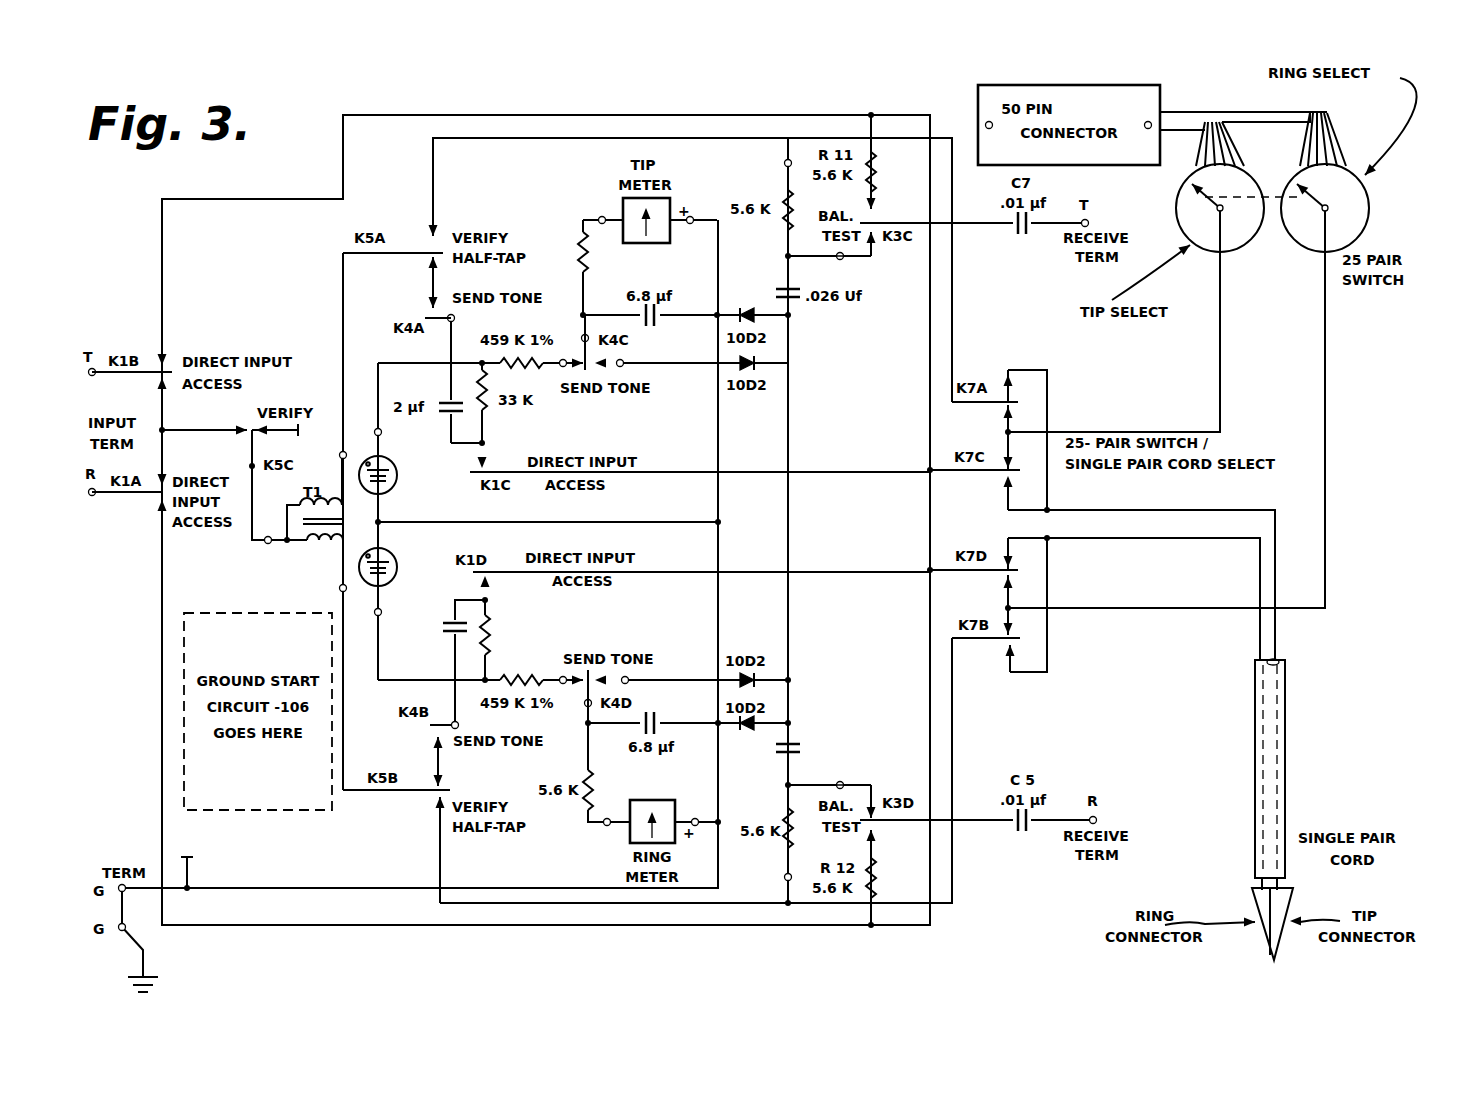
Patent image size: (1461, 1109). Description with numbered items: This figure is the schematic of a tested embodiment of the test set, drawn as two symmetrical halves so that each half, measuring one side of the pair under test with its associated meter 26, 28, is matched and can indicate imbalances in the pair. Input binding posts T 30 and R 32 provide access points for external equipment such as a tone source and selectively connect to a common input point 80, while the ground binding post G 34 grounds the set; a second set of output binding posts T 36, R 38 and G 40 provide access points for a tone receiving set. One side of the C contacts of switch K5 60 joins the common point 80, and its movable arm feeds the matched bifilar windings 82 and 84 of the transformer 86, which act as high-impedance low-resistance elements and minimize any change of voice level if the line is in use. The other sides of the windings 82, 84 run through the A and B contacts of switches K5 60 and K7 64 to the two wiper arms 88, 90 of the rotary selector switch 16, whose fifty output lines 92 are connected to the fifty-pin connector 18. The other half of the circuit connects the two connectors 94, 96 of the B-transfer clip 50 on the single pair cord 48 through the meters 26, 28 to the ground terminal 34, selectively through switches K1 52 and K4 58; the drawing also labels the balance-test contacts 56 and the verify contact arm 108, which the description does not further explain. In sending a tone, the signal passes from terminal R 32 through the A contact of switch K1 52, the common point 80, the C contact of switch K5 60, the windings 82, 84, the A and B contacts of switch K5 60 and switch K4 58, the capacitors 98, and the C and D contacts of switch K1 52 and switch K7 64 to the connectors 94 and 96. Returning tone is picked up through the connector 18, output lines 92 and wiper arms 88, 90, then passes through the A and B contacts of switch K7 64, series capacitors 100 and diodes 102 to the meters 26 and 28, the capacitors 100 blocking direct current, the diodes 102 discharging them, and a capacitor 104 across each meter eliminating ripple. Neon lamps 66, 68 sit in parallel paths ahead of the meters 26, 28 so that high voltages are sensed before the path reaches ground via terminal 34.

The selector switch 16 is at (1313, 250).
The 50-pin connector 18 is at (1168, 93).
The meter 26 is at (655, 228).
The meter 28 is at (630, 835).
The input binding post T 30 is at (100, 366).
The input binding post R 32 is at (94, 500).
The ground binding post G 34 is at (127, 895).
The output binding post T 36 is at (1093, 220).
The output binding post R 38 is at (1097, 818).
The output binding post G 40 is at (118, 935).
The single pair cord 48 is at (1287, 735).
The clip 50 is at (1300, 898).
The switch K1 52 is at (146, 345).
The balance test relay contacts 56 is at (875, 215).
The switch K4 58 is at (412, 300).
The switch K5 60 is at (445, 222).
The switch K7 64 is at (1058, 398).
The neon lamp 66 is at (398, 478).
The neon lamp 68 is at (394, 562).
The common input point 80 is at (165, 428).
The bifilar winding 82 is at (295, 506).
The bifilar winding 84 is at (320, 548).
The transformer T1 86 is at (283, 549).
The wiper arm 88 is at (1228, 238).
The wiper arm 90 is at (1335, 213).
The output lines 92 is at (1220, 148).
The connector 94 is at (1255, 897).
The connector 96 is at (1282, 937).
The capacitor 98 is at (445, 415).
The capacitor 100 is at (800, 300).
The diode 102 is at (747, 305).
The capacitor 104 is at (630, 305).
The verify relay contact arm 108 is at (282, 431).